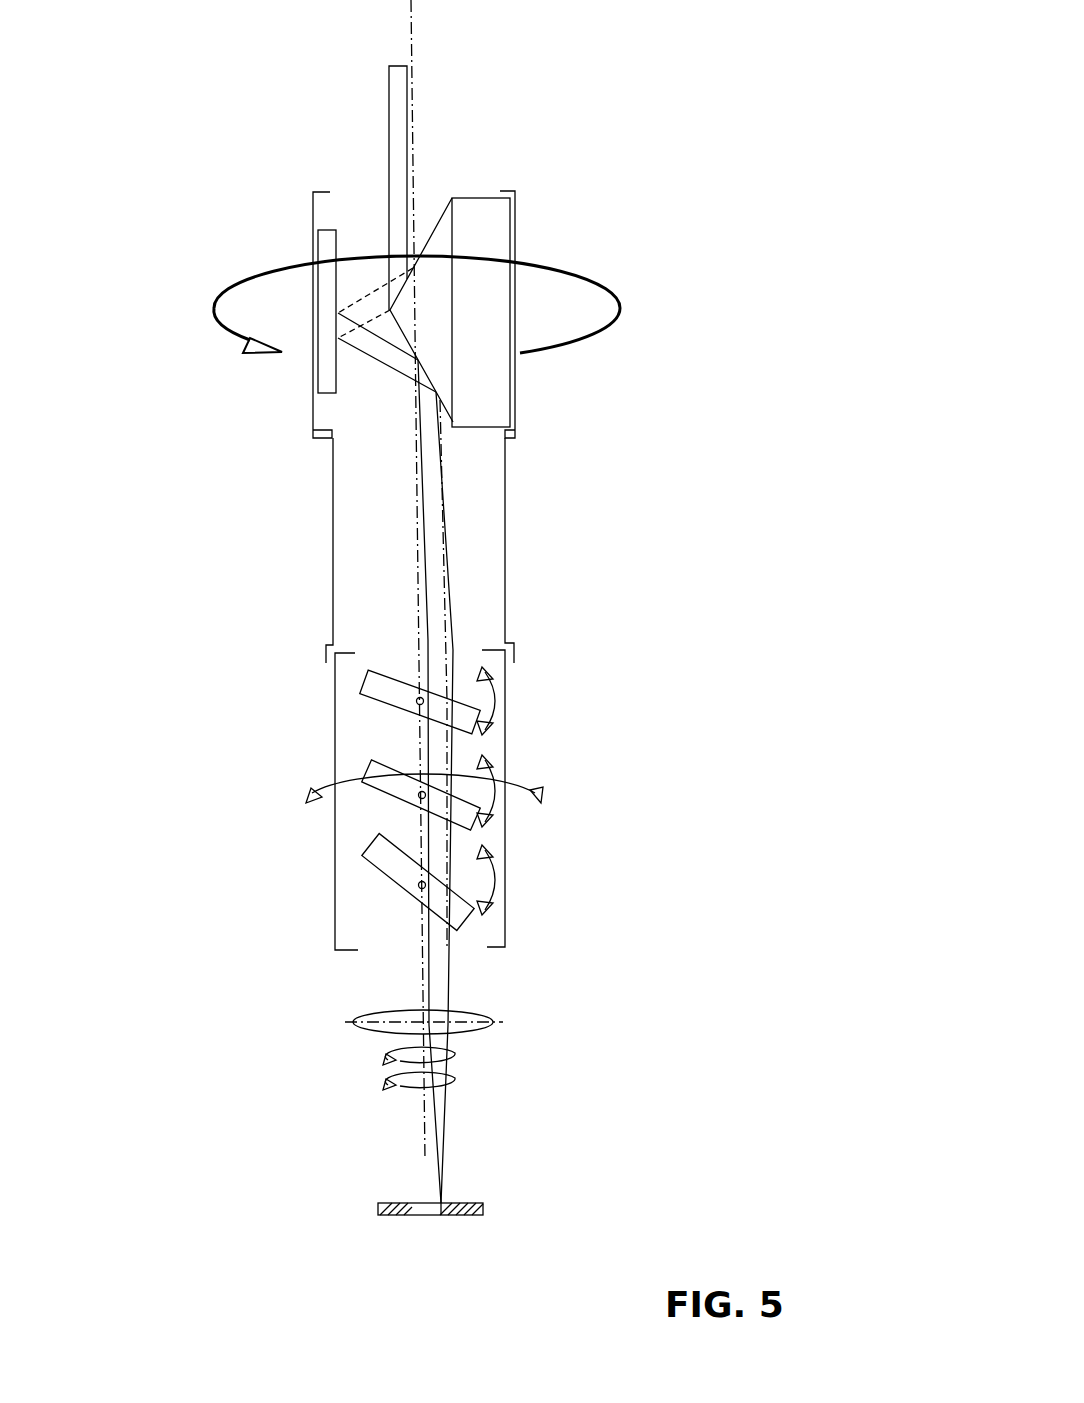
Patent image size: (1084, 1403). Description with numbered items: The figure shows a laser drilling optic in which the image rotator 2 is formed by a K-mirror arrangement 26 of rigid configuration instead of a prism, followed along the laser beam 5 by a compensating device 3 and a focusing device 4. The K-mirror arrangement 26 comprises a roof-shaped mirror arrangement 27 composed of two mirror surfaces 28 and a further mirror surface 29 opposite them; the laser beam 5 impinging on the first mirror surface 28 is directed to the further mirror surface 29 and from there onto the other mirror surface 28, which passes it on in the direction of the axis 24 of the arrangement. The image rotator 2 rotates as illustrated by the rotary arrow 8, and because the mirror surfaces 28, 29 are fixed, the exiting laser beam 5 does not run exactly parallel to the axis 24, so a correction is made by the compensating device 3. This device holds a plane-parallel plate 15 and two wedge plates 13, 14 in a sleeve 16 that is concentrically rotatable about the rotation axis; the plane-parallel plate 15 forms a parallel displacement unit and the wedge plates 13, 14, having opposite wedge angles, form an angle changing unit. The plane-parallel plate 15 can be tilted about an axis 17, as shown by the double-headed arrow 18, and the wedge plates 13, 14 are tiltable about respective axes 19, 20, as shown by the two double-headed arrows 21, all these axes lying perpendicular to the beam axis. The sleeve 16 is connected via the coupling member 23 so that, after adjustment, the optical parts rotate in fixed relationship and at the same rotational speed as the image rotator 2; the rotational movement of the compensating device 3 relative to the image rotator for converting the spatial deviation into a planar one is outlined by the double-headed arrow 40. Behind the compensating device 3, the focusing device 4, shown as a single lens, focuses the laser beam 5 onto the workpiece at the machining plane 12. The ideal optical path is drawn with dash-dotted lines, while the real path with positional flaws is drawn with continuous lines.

The image rotator 2 is at (275, 222).
The compensating device 3 is at (278, 752).
The focusing device 4 is at (470, 1018).
The laser beam 5 is at (402, 100).
The rotary arrow 8 is at (572, 272).
The machining plane 12 is at (462, 1202).
The wedge plate 13 is at (373, 809).
The wedge plate 14 is at (377, 883).
The plane-parallel plate 15 is at (374, 698).
The sleeve 16 is at (510, 918).
The axis 17 is at (420, 701).
The double-headed arrow 18 is at (498, 700).
The axis 19 is at (422, 795).
The axis 20 is at (422, 885).
The double-headed arrows 21 is at (495, 810).
The coupling member 23 is at (505, 548).
The axis 24 is at (413, 30).
The K-mirror arrangement 26 is at (416, 299).
The roof-shaped mirror arrangement 27 is at (445, 240).
The mirror surfaces 28 is at (430, 233).
The further mirror surface 29 is at (337, 365).
The double-headed arrow 40 is at (530, 760).